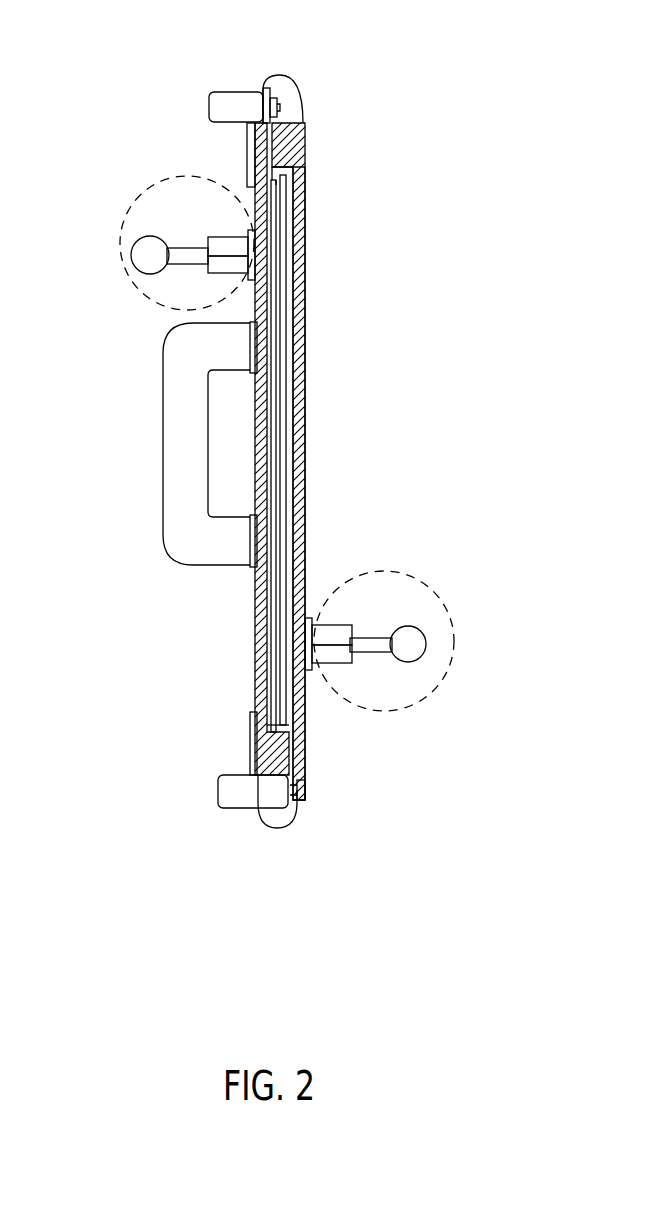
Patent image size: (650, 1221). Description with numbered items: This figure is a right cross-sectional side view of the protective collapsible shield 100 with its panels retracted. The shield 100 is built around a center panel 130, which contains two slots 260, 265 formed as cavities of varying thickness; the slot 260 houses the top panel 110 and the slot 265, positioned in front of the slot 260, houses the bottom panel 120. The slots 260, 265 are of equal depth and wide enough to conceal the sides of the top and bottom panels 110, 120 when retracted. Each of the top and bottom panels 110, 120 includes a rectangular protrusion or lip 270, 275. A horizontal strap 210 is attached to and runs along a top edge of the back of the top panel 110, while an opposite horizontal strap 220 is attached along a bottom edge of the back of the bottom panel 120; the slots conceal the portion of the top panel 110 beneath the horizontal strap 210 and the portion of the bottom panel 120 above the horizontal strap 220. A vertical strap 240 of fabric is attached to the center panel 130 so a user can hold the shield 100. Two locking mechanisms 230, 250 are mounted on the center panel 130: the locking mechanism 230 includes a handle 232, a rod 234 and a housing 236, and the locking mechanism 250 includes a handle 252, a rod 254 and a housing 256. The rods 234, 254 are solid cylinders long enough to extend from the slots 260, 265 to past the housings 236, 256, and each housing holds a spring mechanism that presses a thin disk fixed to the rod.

The shield 100 is at (285, 35).
The top panel 110 is at (266, 648).
The bottom panel 120 is at (300, 262).
The center panel 130 is at (301, 367).
The horizontal strap 210 is at (227, 113).
The horizontal strap 220 is at (229, 798).
The locking mechanism 230 is at (146, 263).
The handle 232 is at (142, 262).
The rod 234 is at (190, 256).
The housing 236 is at (225, 273).
The vertical strap 240 is at (195, 455).
The locking mechanism 250 is at (426, 663).
The handle 252 is at (417, 655).
The rod 254 is at (373, 642).
The housing 256 is at (333, 657).
The slot 260 is at (280, 693).
The slot 265 is at (283, 227).
The lip 270 is at (255, 720).
The lip 275 is at (282, 170).